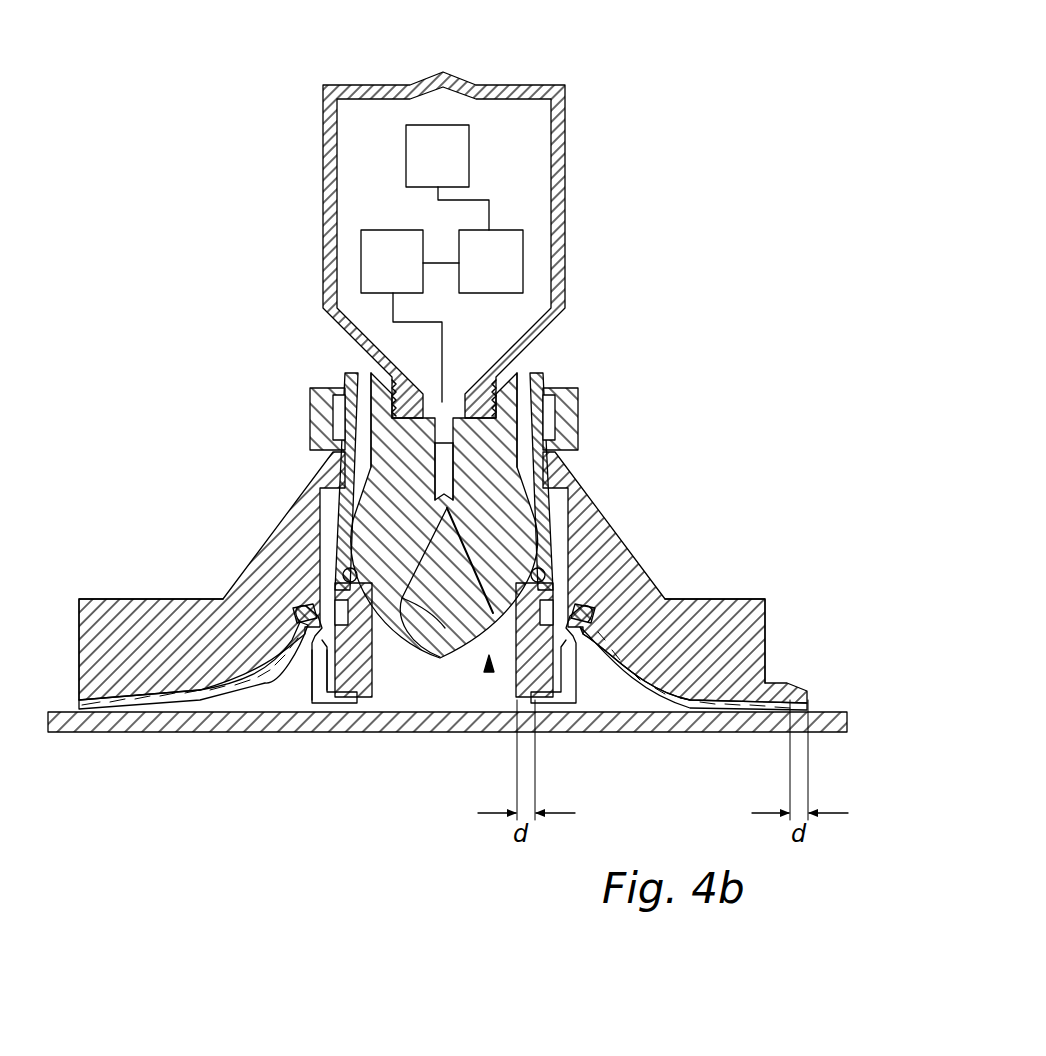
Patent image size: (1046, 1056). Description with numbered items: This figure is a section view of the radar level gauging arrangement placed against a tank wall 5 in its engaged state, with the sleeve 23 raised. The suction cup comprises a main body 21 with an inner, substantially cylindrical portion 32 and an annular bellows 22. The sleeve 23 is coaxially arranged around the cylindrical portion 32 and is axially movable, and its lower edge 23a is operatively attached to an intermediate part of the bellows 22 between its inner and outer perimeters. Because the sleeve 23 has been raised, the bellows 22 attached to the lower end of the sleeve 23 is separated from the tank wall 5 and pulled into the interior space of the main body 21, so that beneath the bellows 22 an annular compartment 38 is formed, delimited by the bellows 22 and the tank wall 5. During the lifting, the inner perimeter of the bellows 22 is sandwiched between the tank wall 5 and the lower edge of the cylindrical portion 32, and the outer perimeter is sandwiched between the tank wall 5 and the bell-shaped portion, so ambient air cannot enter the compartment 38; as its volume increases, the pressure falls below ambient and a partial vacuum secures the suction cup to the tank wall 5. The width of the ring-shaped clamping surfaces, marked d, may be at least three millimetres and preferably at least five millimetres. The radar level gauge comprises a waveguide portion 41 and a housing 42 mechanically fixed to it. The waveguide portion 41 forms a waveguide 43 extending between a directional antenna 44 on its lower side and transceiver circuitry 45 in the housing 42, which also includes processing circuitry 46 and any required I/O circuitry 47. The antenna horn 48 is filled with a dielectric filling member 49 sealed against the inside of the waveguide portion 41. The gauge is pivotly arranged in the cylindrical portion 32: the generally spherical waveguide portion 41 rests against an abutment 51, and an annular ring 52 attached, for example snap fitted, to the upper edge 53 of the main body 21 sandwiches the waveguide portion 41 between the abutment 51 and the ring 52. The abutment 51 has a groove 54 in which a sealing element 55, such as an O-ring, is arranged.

The tank wall 5 is at (123, 723).
The main body 21 is at (731, 637).
The annular bellows 22 is at (205, 712).
The sleeve 23 is at (562, 575).
The lower edge of the sleeve 23a is at (593, 700).
The cylindrical portion 32 is at (380, 690).
The annular compartment 38 is at (288, 690).
The waveguide portion 41 is at (507, 440).
The housing 42 is at (560, 147).
The waveguide 43 is at (447, 485).
The directional antenna 44 is at (489, 672).
The transceiver circuitry 45 is at (368, 262).
The processing circuitry 46 is at (507, 262).
The I/O circuitry 47 is at (465, 160).
The antenna horn 48 is at (437, 690).
The dielectric filling member 49 is at (407, 690).
The abutment 51 is at (352, 520).
The annular ring 52 is at (338, 398).
The upper edge of the main body 53 is at (337, 428).
The groove 54 is at (310, 605).
The sealing element 55 is at (337, 553).